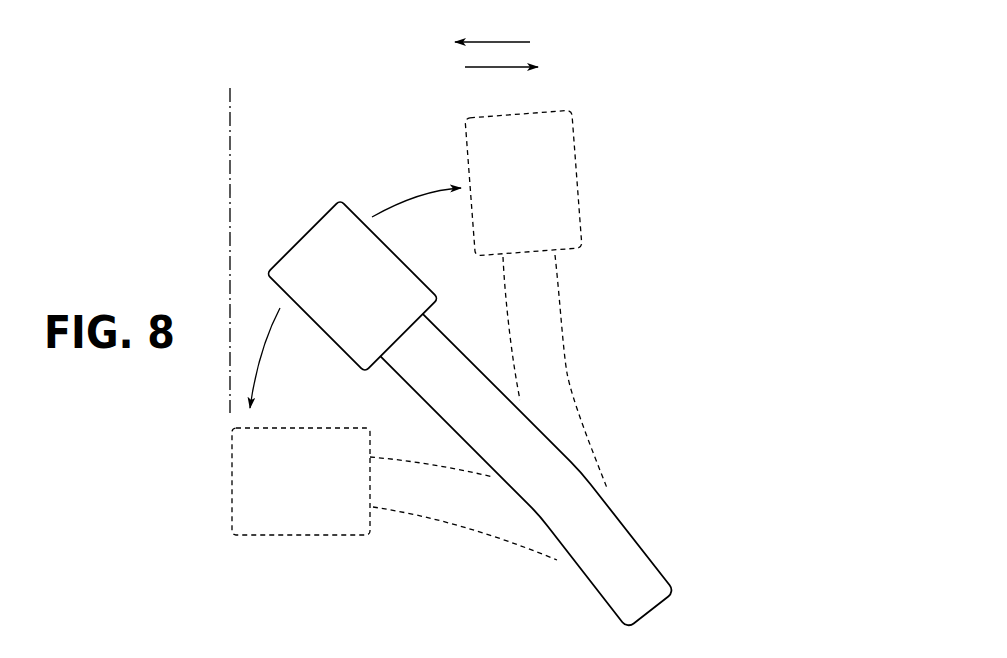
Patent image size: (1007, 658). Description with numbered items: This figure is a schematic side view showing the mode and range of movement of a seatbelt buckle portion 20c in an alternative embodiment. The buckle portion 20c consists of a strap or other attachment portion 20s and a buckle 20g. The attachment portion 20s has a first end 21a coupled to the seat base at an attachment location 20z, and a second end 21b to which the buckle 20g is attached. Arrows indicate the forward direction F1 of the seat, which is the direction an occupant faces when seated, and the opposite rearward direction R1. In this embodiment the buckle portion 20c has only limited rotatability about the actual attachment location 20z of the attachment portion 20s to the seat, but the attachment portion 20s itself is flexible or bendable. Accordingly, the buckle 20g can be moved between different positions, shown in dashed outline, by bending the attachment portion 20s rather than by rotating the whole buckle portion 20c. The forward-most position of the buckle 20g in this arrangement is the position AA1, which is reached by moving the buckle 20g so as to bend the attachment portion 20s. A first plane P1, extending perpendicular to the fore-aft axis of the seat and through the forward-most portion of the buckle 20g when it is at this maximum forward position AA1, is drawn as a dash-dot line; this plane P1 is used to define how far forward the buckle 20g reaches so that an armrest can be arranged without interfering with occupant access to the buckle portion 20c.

The first plane P1 is at (230, 148).
The forward direction F1 is at (490, 42).
The rearward direction R1 is at (505, 67).
The buckle 20g is at (309, 231).
The position AA1 is at (394, 494).
The attachment portion 20s is at (463, 398).
The second end 21b is at (427, 341).
The first end 21a is at (632, 540).
The buckle portion 20c is at (648, 540).
The attachment location 20z is at (642, 602).